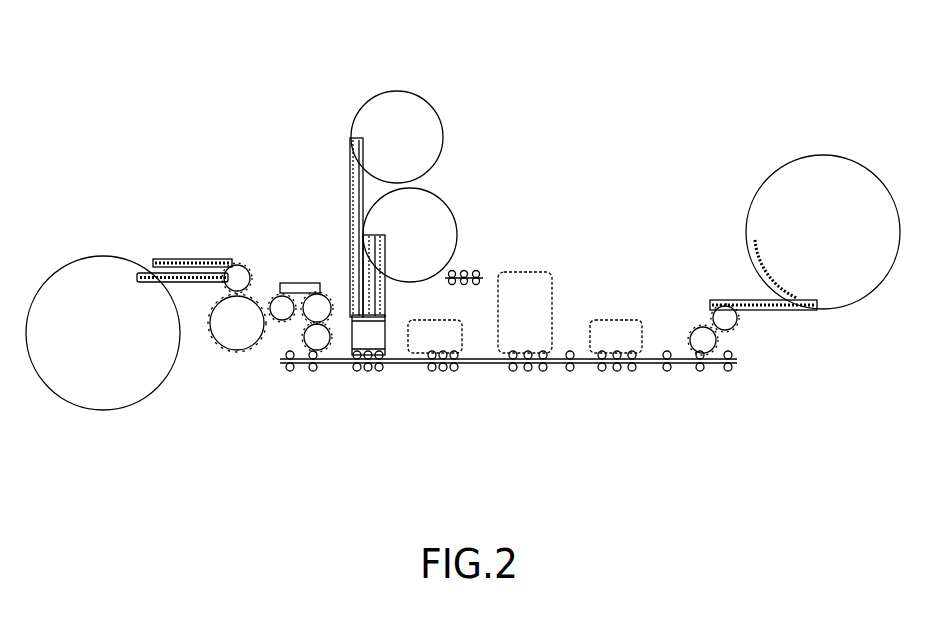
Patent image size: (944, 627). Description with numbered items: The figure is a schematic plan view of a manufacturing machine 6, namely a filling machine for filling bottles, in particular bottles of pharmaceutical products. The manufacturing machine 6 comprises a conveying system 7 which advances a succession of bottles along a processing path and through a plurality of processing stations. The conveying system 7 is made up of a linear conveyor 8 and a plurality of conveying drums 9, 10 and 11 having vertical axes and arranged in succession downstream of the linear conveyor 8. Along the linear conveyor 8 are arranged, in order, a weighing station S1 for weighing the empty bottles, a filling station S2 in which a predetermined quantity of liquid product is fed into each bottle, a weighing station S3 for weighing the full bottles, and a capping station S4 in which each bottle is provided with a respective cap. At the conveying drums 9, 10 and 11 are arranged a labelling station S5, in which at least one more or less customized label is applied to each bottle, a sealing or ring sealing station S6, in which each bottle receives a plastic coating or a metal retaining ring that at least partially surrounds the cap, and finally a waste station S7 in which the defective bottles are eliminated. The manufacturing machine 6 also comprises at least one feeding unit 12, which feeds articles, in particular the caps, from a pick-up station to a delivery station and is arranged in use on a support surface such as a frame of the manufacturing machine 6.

The manufacturing machine 6 is at (196, 113).
The conveying system 7 is at (572, 428).
The linear conveyor 8 is at (712, 368).
The conveying drum 9 is at (284, 304).
The conveying drum 10 is at (237, 277).
The conveying drum 11 is at (228, 341).
The feeding unit 12 is at (350, 340).
The weighing station S1 is at (615, 376).
The filling station S2 is at (520, 376).
The weighing station S3 is at (432, 381).
The capping station S4 is at (357, 380).
The labelling station S5 is at (267, 283).
The sealing station S6 is at (207, 353).
The waste station S7 is at (243, 245).